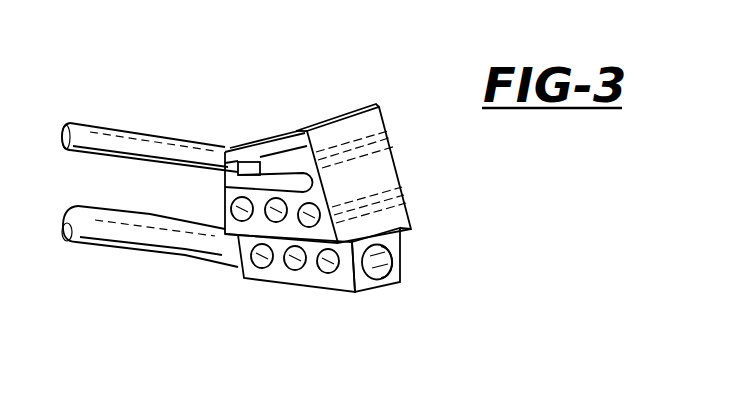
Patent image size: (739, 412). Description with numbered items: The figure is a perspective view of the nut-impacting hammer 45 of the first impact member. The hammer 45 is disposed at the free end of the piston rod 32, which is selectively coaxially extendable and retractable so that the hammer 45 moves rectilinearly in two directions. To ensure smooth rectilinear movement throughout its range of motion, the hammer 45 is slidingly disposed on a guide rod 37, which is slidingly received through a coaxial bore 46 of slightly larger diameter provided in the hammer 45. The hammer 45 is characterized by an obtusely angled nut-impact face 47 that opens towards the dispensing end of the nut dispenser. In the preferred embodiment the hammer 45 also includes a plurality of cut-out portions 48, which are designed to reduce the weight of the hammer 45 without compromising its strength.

The piston rod 32 is at (172, 146).
The guide rod 37 is at (121, 232).
The hammer 45 is at (388, 95).
The coaxial bore 46 is at (412, 242).
The nut-impact face 47 is at (370, 172).
The cut-out portions 48 is at (274, 176).